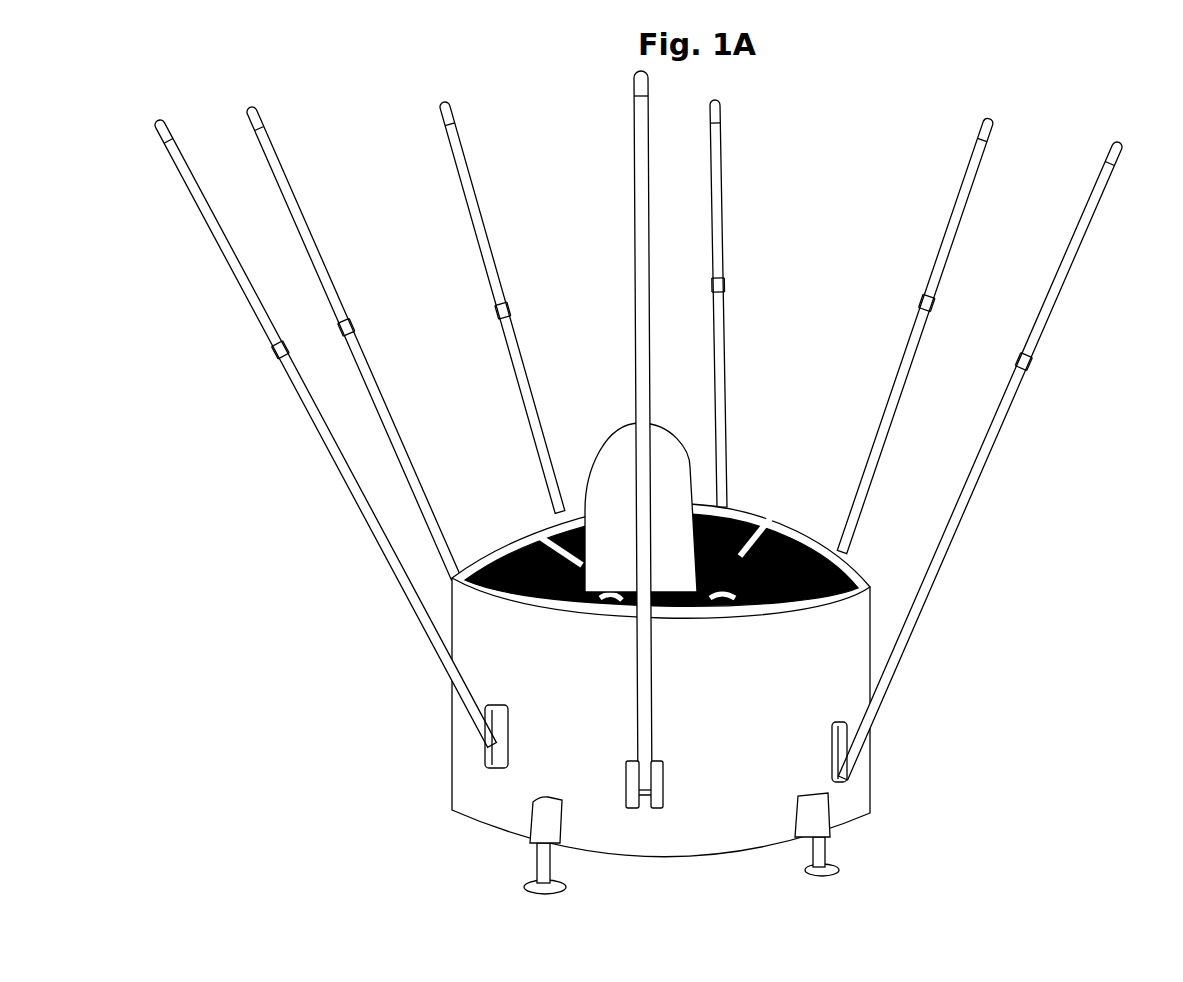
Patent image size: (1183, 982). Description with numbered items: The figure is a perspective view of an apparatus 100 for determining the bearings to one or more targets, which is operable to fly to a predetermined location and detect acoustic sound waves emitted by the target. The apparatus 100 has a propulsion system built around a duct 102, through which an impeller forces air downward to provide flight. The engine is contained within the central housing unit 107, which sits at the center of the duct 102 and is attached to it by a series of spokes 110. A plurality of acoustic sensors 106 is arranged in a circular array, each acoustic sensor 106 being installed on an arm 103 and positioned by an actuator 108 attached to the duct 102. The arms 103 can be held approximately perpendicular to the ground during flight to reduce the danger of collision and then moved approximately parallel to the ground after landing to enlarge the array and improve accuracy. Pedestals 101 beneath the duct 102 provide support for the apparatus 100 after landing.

The apparatus 100 is at (1095, 106).
The pedestals 101 is at (540, 880).
The duct 102 is at (470, 779).
The arm 103 is at (347, 480).
The acoustic sensors 106 is at (175, 117).
The central housing unit 107 is at (617, 473).
The actuator 108 is at (485, 747).
The spokes 110 is at (748, 510).